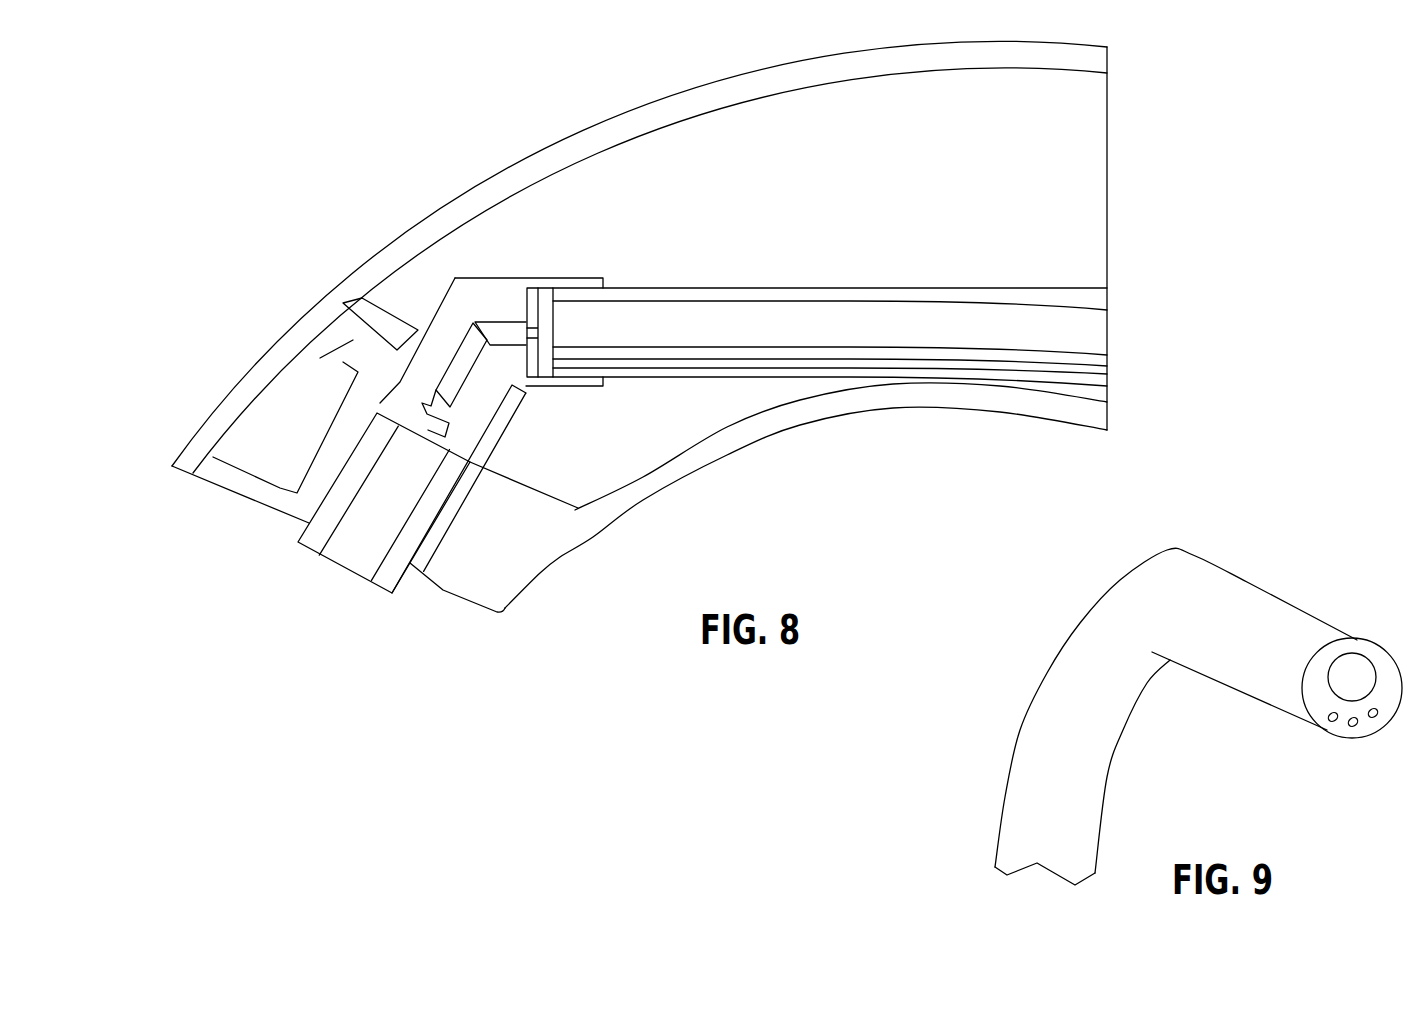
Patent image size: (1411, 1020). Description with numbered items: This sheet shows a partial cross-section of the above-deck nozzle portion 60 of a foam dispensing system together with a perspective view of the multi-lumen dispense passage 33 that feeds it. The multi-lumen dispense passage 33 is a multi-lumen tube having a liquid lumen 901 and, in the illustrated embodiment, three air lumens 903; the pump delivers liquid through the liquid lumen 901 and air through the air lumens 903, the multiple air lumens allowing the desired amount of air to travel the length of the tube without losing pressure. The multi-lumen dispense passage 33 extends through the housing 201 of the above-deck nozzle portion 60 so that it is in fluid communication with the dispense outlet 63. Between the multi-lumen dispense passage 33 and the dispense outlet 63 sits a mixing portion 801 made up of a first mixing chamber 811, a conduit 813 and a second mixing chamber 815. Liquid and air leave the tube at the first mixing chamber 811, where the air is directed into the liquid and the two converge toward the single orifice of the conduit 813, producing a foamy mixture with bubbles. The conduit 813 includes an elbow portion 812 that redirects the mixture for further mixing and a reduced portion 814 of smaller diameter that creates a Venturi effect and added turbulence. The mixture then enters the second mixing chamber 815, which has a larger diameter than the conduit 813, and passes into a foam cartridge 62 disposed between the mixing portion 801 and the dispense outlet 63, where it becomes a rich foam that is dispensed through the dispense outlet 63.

In FIG. 8, the above-deck nozzle portion 60 is at (452, 50).
In FIG. 8, the housing 201 is at (751, 88).
In FIG. 8, the multi-lumen dispense passage 33 is at (878, 330).
In FIG. 9, the multi-lumen dispense passage 33 is at (1023, 586).
In FIG. 8, the mixing portion 801 is at (495, 275).
In FIG. 8, the first mixing chamber 811 is at (547, 317).
In FIG. 8, the elbow portion 812 is at (488, 336).
In FIG. 8, the conduit 813 is at (461, 373).
In FIG. 8, the reduced portion 814 is at (440, 415).
In FIG. 8, the second mixing chamber 815 is at (417, 413).
In FIG. 8, the foam cartridge 62 is at (368, 503).
In FIG. 8, the dispense outlet 63 is at (335, 563).
In FIG. 9, the liquid lumen 901 is at (1352, 652).
In FIG. 9, the air lumens 903 is at (1331, 722).